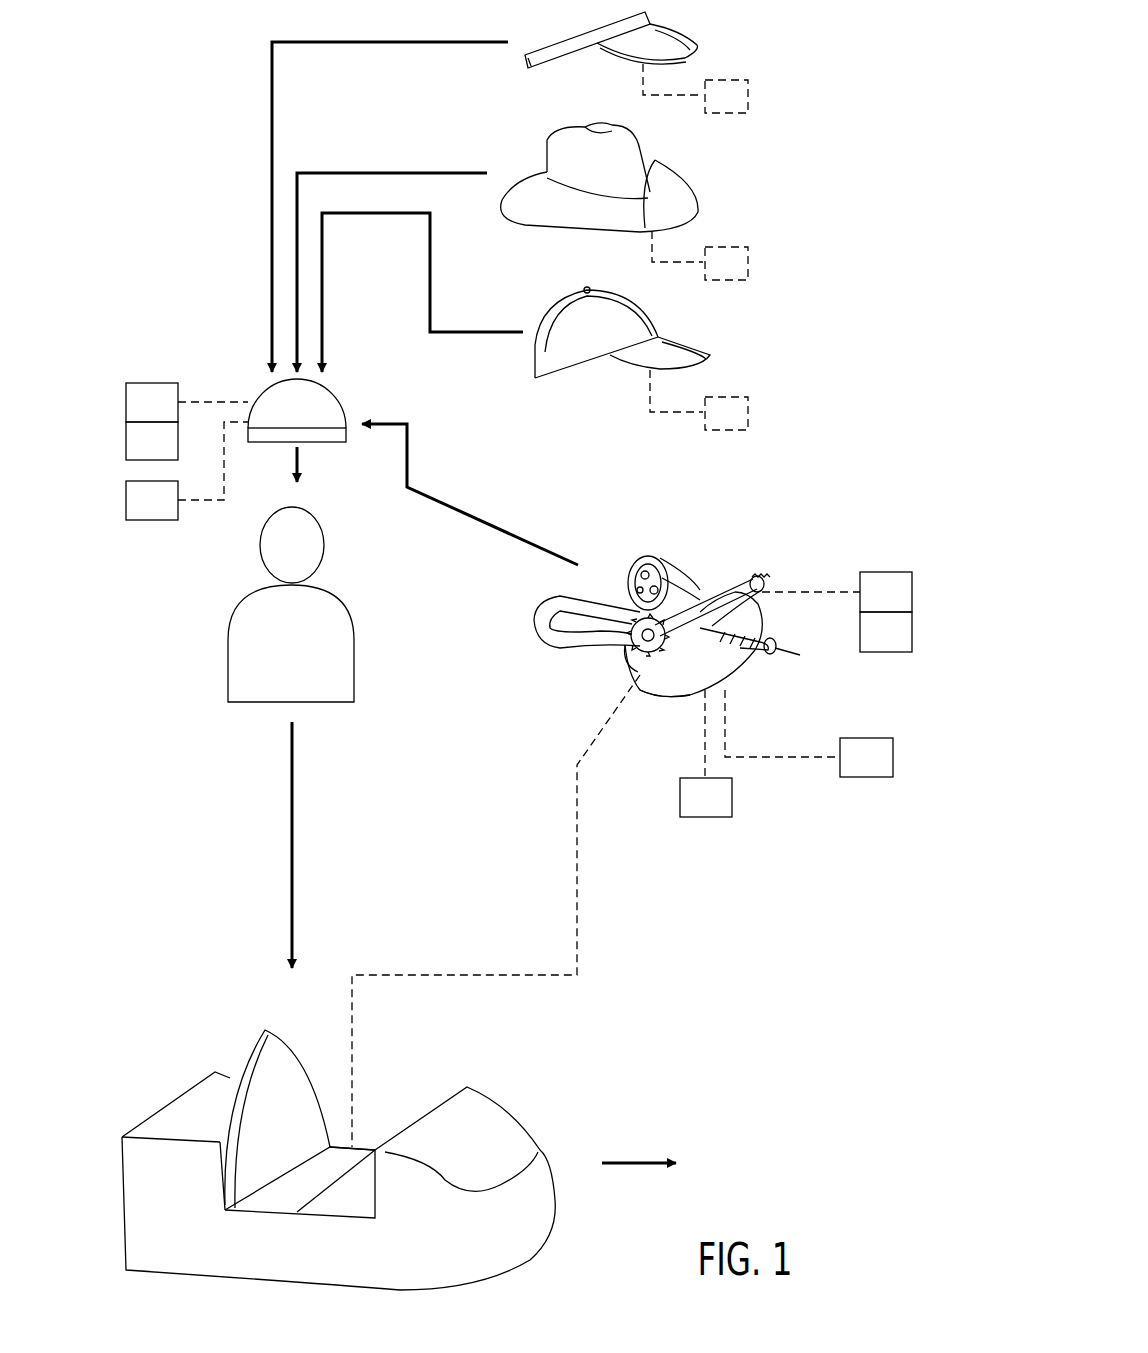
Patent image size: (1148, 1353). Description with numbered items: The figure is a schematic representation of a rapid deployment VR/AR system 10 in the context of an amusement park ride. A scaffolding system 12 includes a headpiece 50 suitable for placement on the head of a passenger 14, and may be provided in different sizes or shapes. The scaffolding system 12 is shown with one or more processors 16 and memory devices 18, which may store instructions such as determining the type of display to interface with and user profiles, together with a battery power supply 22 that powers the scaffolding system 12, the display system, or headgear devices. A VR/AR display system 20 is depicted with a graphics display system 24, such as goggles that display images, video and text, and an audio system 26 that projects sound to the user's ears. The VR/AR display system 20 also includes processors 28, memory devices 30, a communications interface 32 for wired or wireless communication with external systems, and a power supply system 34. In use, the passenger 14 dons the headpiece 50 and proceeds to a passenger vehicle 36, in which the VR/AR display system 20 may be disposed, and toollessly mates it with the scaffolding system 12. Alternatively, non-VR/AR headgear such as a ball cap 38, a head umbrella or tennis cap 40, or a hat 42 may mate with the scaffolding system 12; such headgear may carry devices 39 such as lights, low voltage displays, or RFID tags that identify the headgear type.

The rapid deployment VR/AR system 10 is at (800, 505).
The scaffolding system 12 is at (283, 421).
The passenger 14 is at (354, 653).
The processor 16 is at (126, 403).
The memory device 18 is at (126, 442).
The VR/AR display system 20 is at (667, 628).
The battery power supply 22 is at (150, 520).
The graphics display system 24 is at (688, 685).
The audio system 26 is at (633, 590).
The processor 28 is at (885, 572).
The memory device 30 is at (885, 652).
The communications interface 32 is at (705, 817).
The power supply system 34 is at (868, 777).
The passenger vehicle 36 is at (268, 1260).
The ball cap 38 is at (700, 340).
The device 39 is at (726, 255).
The head umbrella or tennis cap 40 is at (683, 32).
The hat 42 is at (675, 165).
The headpiece 50 is at (318, 438).